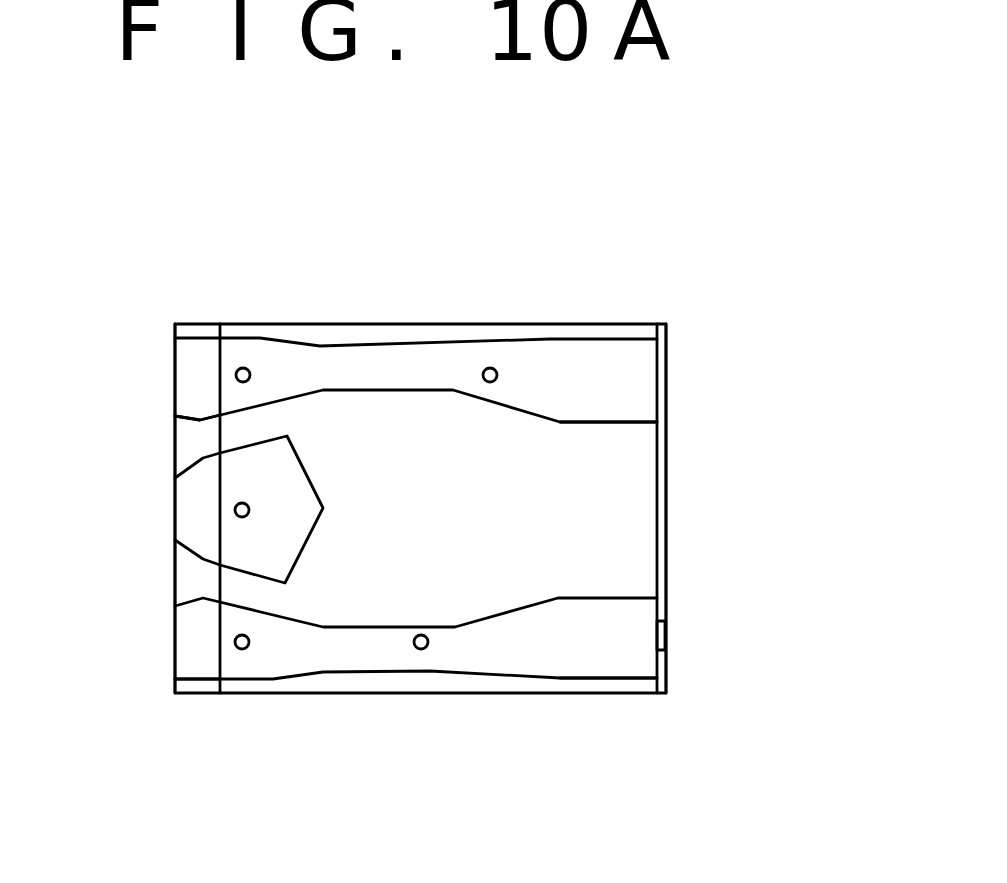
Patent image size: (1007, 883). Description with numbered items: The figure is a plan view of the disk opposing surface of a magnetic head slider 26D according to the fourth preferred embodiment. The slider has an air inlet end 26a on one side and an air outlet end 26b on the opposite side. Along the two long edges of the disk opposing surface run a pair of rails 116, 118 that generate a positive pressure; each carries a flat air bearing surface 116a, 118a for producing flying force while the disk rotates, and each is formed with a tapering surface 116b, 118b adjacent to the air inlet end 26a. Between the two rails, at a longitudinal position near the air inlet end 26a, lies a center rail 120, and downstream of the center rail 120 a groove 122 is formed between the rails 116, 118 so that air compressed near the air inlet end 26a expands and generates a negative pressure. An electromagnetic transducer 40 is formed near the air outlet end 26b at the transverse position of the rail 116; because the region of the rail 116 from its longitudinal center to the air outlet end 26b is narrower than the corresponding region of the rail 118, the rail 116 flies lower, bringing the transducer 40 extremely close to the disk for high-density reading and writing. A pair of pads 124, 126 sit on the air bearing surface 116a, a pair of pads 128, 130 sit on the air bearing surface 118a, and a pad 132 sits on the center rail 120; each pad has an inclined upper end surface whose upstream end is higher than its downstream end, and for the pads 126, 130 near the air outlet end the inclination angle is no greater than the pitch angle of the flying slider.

The magnetic head slider 26D is at (330, 308).
The air inlet end 26a is at (172, 447).
The air outlet end 26b is at (666, 365).
The groove 122 is at (640, 520).
The rail 118 is at (406, 338).
The air bearing surface 118a is at (615, 366).
The tapering surface 118b is at (185, 372).
The pad 128 is at (243, 368).
The pad 130 is at (490, 368).
The center rail 120 is at (293, 465).
The pad 132 is at (235, 510).
The rail 116 is at (407, 673).
The air bearing surface 116a is at (567, 650).
The tapering surface 116b is at (185, 641).
The pad 124 is at (241, 650).
The pad 126 is at (421, 635).
The electromagnetic transducer 40 is at (665, 635).